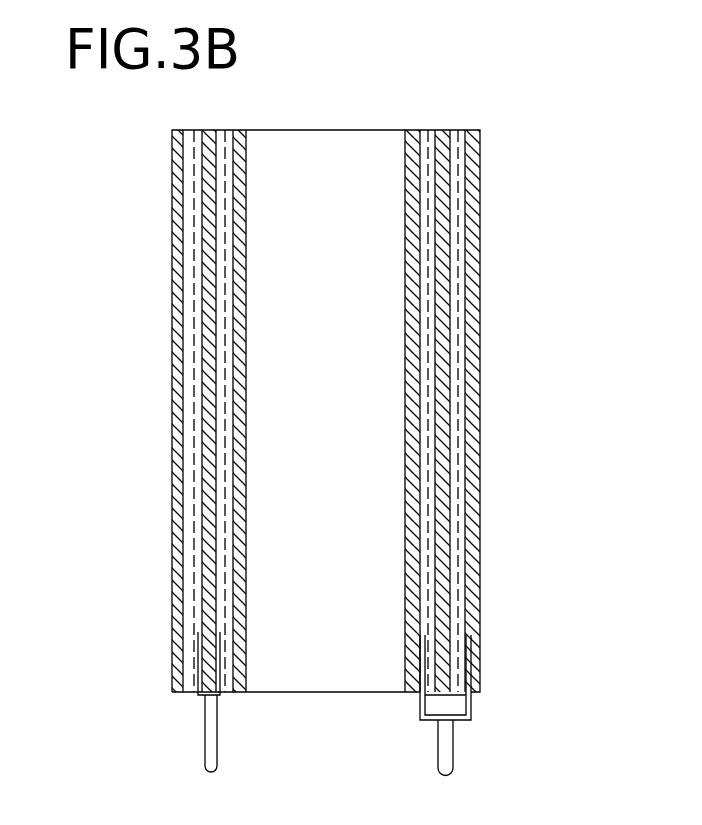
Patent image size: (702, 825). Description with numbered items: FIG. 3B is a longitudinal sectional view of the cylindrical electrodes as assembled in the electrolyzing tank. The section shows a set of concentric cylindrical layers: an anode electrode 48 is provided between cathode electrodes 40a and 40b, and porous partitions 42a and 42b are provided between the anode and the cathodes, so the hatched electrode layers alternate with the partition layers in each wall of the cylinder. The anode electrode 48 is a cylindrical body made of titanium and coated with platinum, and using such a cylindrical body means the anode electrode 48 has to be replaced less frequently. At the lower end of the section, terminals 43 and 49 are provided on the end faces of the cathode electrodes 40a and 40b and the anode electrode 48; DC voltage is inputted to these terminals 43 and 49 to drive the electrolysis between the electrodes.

The cathode electrode 40a is at (178, 277).
The cathode electrode 40b is at (237, 435).
The porous partition 42a is at (193, 594).
The porous partition 42b is at (430, 598).
The anode electrode 48 is at (443, 460).
The terminal 49 is at (210, 722).
The terminal 43 is at (447, 745).